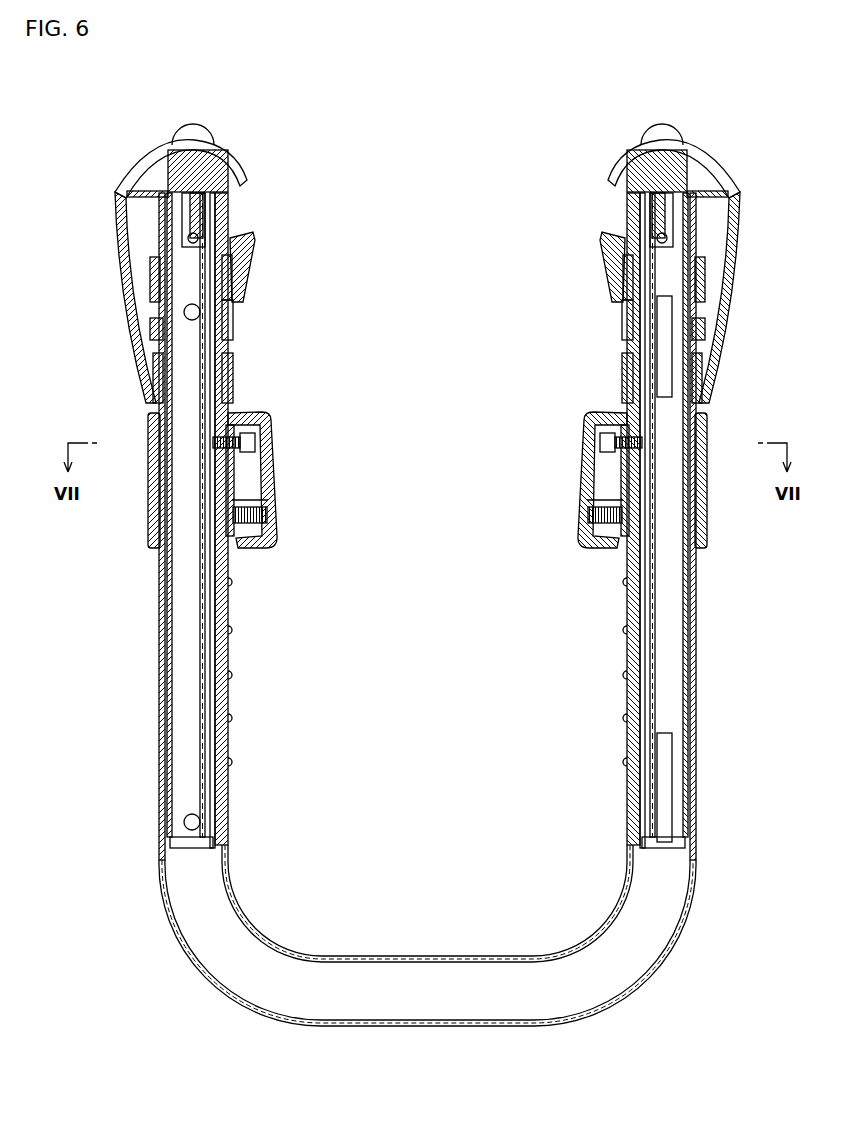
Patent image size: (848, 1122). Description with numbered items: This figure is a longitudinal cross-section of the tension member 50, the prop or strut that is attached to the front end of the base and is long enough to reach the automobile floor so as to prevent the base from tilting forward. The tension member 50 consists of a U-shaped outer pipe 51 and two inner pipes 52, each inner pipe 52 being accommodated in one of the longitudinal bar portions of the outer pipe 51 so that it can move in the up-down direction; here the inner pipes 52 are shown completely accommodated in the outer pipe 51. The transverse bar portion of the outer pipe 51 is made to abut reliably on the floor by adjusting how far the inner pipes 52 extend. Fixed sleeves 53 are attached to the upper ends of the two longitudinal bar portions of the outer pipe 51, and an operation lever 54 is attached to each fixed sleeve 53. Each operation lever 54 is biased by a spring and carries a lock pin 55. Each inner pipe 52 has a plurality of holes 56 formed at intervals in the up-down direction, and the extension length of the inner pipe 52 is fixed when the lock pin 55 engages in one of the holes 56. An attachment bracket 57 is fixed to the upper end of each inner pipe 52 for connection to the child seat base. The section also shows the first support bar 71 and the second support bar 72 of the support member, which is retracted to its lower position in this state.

The tension member 50 is at (218, 1040).
The U-shaped outer pipe 51 is at (160, 877).
The inner pipes 52 is at (230, 797).
The fixed sleeves 53 is at (148, 517).
The operation lever 54 is at (274, 466).
The lock pin 55 is at (243, 408).
The holes 56 is at (230, 588).
The attachment bracket 57 is at (247, 300).
The first support bar 71 is at (160, 797).
The second support bar 72 is at (697, 794).